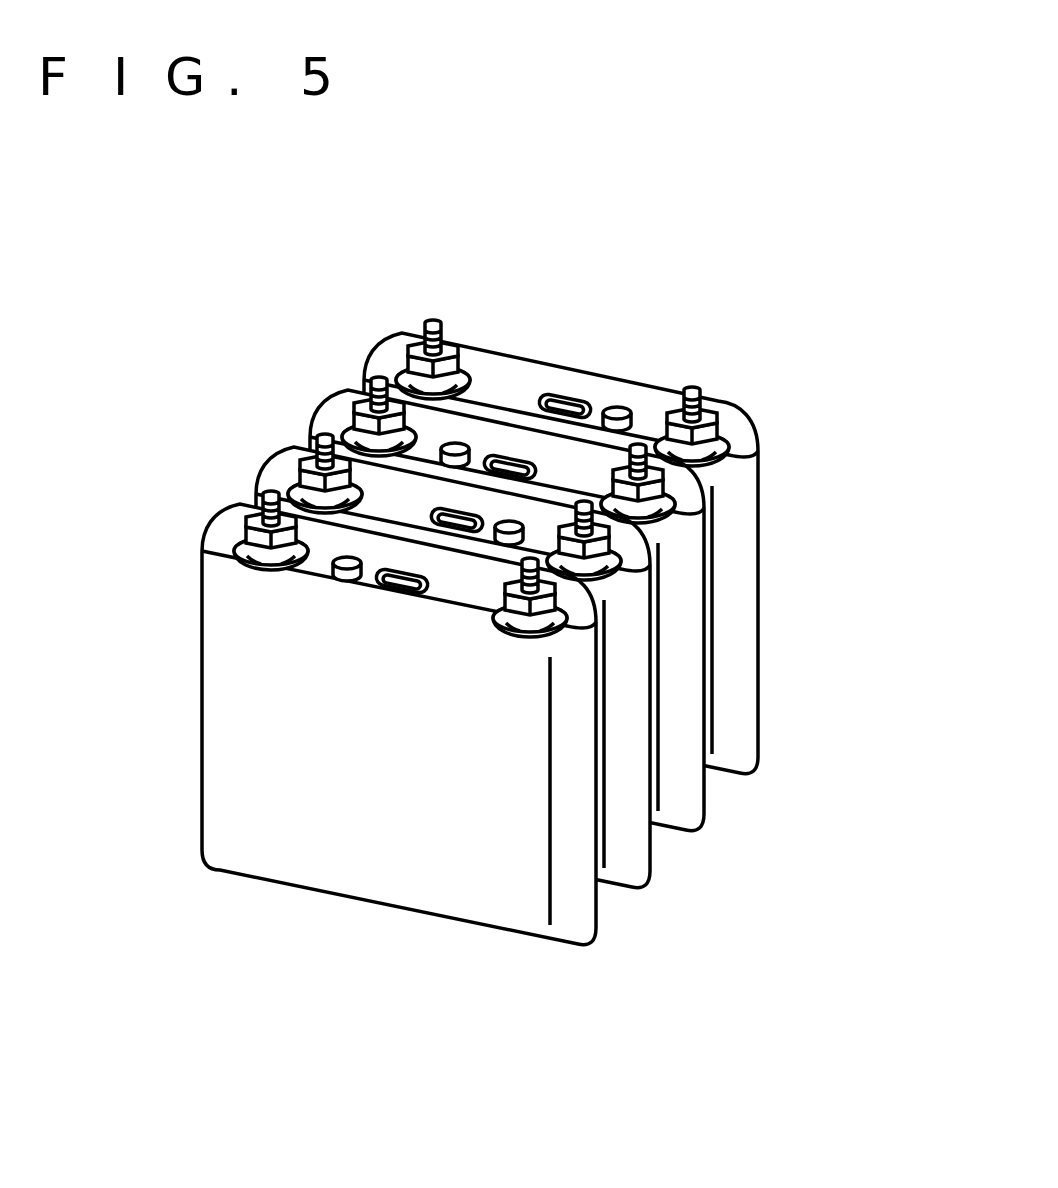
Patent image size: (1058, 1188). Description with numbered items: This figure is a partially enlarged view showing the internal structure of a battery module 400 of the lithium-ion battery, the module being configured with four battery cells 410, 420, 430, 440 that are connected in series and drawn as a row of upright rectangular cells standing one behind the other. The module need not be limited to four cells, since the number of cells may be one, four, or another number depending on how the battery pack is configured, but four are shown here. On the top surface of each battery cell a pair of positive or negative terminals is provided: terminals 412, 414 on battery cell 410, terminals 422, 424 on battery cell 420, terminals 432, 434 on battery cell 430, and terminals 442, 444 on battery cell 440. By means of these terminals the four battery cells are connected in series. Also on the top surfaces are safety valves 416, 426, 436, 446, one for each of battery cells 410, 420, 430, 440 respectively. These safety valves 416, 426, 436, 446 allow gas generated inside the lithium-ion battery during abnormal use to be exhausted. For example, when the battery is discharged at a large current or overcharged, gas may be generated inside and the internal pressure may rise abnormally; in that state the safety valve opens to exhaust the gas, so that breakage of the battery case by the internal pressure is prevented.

The battery module 400 is at (314, 246).
The battery cell 410 is at (469, 758).
The terminal 412 is at (272, 560).
The terminal 414 is at (525, 624).
The safety valve 416 is at (397, 590).
The battery cell 420 is at (548, 662).
The terminal 422 is at (312, 472).
The terminal 424 is at (603, 550).
The safety valve 426 is at (457, 534).
The battery cell 430 is at (582, 548).
The terminal 432 is at (365, 418).
The terminal 434 is at (655, 500).
The safety valve 436 is at (513, 460).
The battery cell 440 is at (634, 544).
The terminal 442 is at (449, 340).
The terminal 444 is at (712, 405).
The safety valve 446 is at (585, 395).